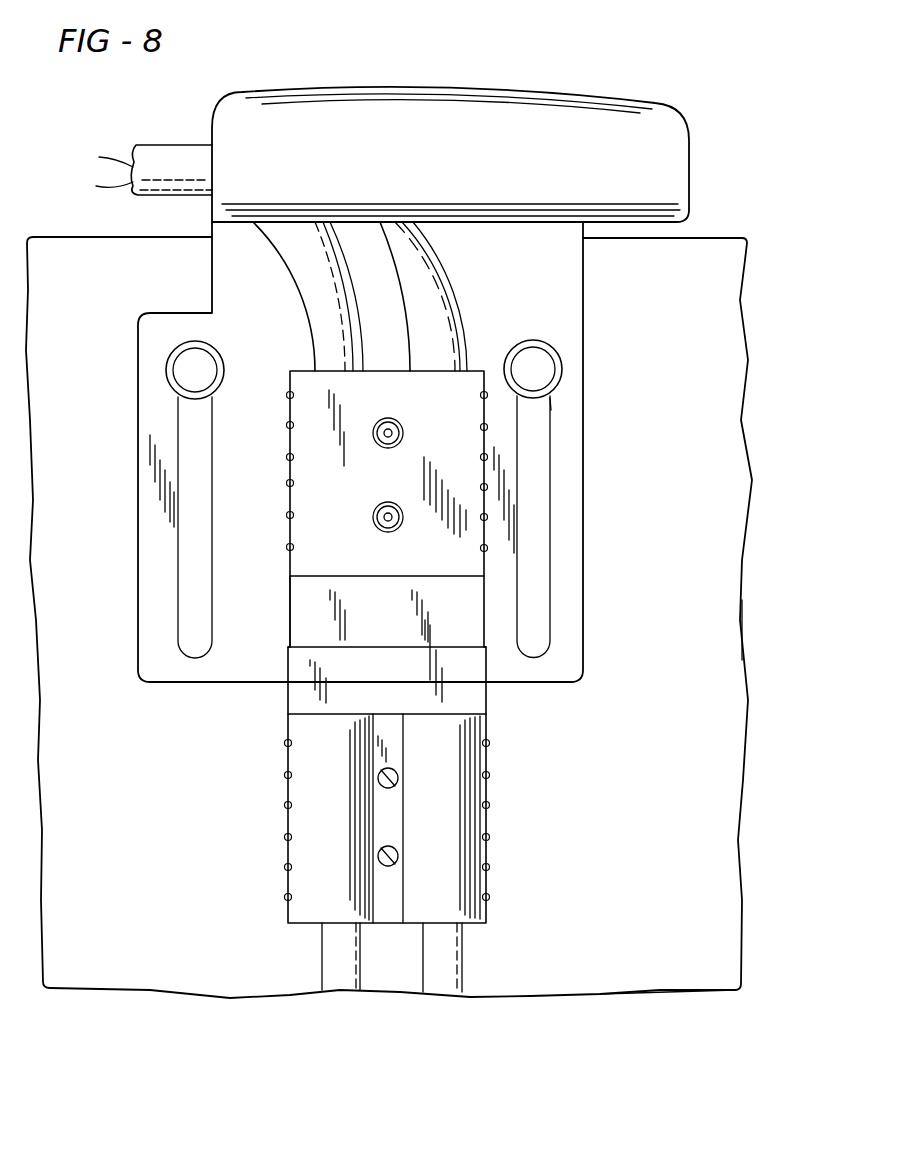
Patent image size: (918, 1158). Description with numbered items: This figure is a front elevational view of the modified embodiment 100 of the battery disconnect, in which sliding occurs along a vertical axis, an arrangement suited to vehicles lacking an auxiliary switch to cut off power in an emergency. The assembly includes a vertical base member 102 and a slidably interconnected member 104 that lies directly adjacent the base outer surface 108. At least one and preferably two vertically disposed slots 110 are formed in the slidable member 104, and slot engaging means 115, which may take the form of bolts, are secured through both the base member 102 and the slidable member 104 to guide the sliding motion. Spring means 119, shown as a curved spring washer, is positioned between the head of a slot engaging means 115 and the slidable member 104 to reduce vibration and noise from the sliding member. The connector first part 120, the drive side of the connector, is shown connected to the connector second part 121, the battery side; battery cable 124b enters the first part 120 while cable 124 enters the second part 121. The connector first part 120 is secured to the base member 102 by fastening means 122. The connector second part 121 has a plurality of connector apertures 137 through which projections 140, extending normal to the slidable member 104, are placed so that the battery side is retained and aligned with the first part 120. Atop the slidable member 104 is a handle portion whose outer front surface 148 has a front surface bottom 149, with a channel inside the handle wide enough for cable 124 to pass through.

The modified embodiment 100 is at (738, 660).
The vertical base member 102 is at (673, 930).
The slidably interconnected member 104 is at (594, 305).
The base outer surface 108 is at (696, 446).
The slots 110 is at (531, 605).
The slot engaging means 115 is at (541, 369).
The spring means 119 is at (556, 393).
The connector first part 120 is at (468, 793).
The connector second part 121 is at (300, 642).
The fastening means 122 is at (397, 787).
The cable 124 is at (172, 156).
The battery cable 124b is at (360, 984).
The connector apertures 137 is at (375, 432).
The projections 140 is at (380, 442).
The outer front surface 148 is at (614, 117).
The front surface bottom 149 is at (548, 224).